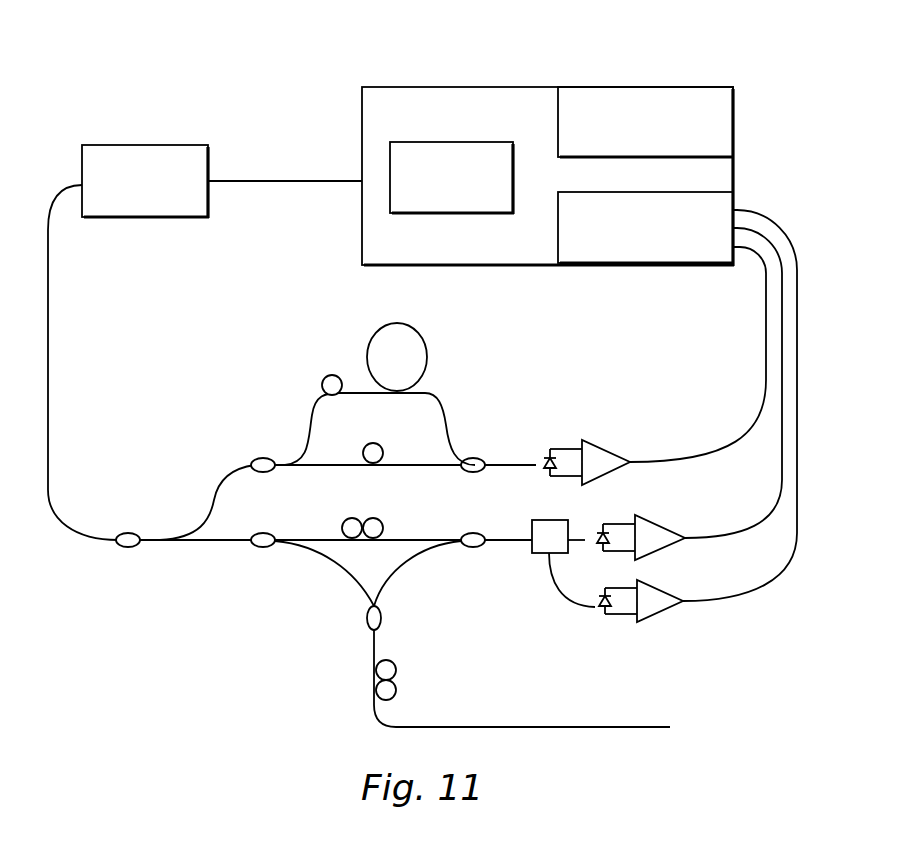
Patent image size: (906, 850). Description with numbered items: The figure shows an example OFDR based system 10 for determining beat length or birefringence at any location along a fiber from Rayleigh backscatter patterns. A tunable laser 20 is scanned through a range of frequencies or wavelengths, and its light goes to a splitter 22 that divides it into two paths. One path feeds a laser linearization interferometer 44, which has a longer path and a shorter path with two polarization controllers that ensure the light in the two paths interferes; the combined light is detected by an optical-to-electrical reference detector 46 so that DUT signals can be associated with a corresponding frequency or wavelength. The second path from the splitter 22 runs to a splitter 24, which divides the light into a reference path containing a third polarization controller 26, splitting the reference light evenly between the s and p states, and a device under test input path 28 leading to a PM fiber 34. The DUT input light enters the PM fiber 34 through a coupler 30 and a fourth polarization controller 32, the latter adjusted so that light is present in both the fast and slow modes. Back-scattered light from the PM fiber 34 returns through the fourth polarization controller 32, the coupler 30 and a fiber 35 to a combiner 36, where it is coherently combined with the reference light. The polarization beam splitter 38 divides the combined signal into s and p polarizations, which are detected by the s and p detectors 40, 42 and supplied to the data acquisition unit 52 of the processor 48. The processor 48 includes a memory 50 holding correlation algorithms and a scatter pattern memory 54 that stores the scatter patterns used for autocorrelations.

The OFDR based system 10 is at (58, 70).
The tunable laser 20 is at (160, 145).
The splitter 22 is at (120, 548).
The splitter 24 is at (259, 549).
The polarization controller PC3 26 is at (381, 524).
The device under test (DUT) input path 28 is at (330, 556).
The coupler 30 is at (383, 618).
The polarization controller PC4 32 is at (370, 669).
The PM fiber 34 is at (522, 678).
The fiber 35 is at (397, 560).
The combiner 36 is at (472, 548).
The polarization beam splitter (PBS) 38 is at (560, 550).
The s optical-to-electrical detector 40 is at (667, 526).
The p optical-to-electrical detector 42 is at (670, 613).
The laser linearization interferometer 44 is at (276, 422).
The reference detector 46 is at (614, 450).
The processor 48 is at (520, 87).
The memory 50 is at (618, 162).
The data acquisition unit 52 is at (660, 191).
The scatter pattern memory 54 is at (450, 213).